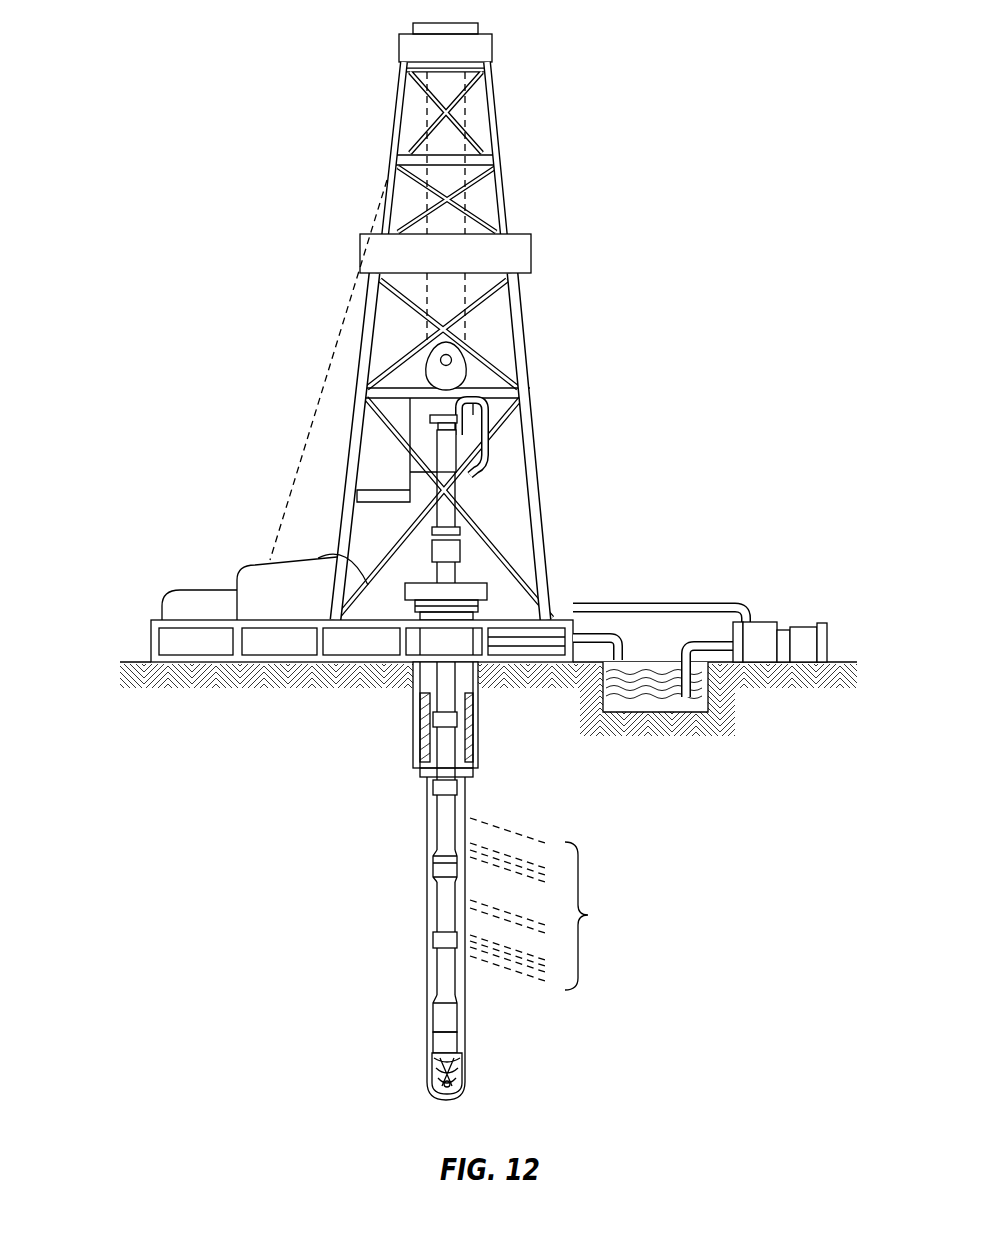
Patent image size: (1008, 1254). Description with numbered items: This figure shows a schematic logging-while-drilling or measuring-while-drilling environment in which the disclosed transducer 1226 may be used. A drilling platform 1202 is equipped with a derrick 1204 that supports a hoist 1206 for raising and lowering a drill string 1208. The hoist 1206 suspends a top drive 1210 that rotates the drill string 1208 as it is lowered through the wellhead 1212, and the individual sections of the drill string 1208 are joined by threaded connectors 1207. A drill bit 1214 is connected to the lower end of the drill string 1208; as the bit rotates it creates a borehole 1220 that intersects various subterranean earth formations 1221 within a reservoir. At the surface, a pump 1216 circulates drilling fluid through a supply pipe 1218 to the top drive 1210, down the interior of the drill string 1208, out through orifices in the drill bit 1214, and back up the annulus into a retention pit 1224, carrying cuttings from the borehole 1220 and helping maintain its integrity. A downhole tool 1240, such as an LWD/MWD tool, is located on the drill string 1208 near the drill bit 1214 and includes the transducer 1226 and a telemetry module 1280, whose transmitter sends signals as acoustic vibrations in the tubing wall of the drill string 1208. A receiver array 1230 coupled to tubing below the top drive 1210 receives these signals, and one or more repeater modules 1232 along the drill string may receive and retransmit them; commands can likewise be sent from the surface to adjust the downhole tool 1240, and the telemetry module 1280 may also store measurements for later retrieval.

The drilling platform 1202 is at (150, 643).
The derrick 1204 is at (507, 176).
The hoist 1206 is at (467, 366).
The threaded connectors 1207 is at (431, 788).
The drill string 1208 is at (436, 826).
The top drive 1210 is at (447, 448).
The wellhead 1212 is at (487, 591).
The drill bit 1214 is at (460, 1075).
The pump 1216 is at (760, 622).
The supply pipe 1218 is at (682, 603).
The borehole 1220 is at (427, 920).
The subterranean earth formations 1221 is at (560, 904).
The retention pit 1224 is at (650, 697).
The transducer 1226 is at (431, 1044).
The receiver array 1230 is at (443, 530).
The repeater modules 1232 is at (433, 870).
The downhole tool 1240 is at (476, 1020).
The telemetry module 1280 is at (431, 1020).